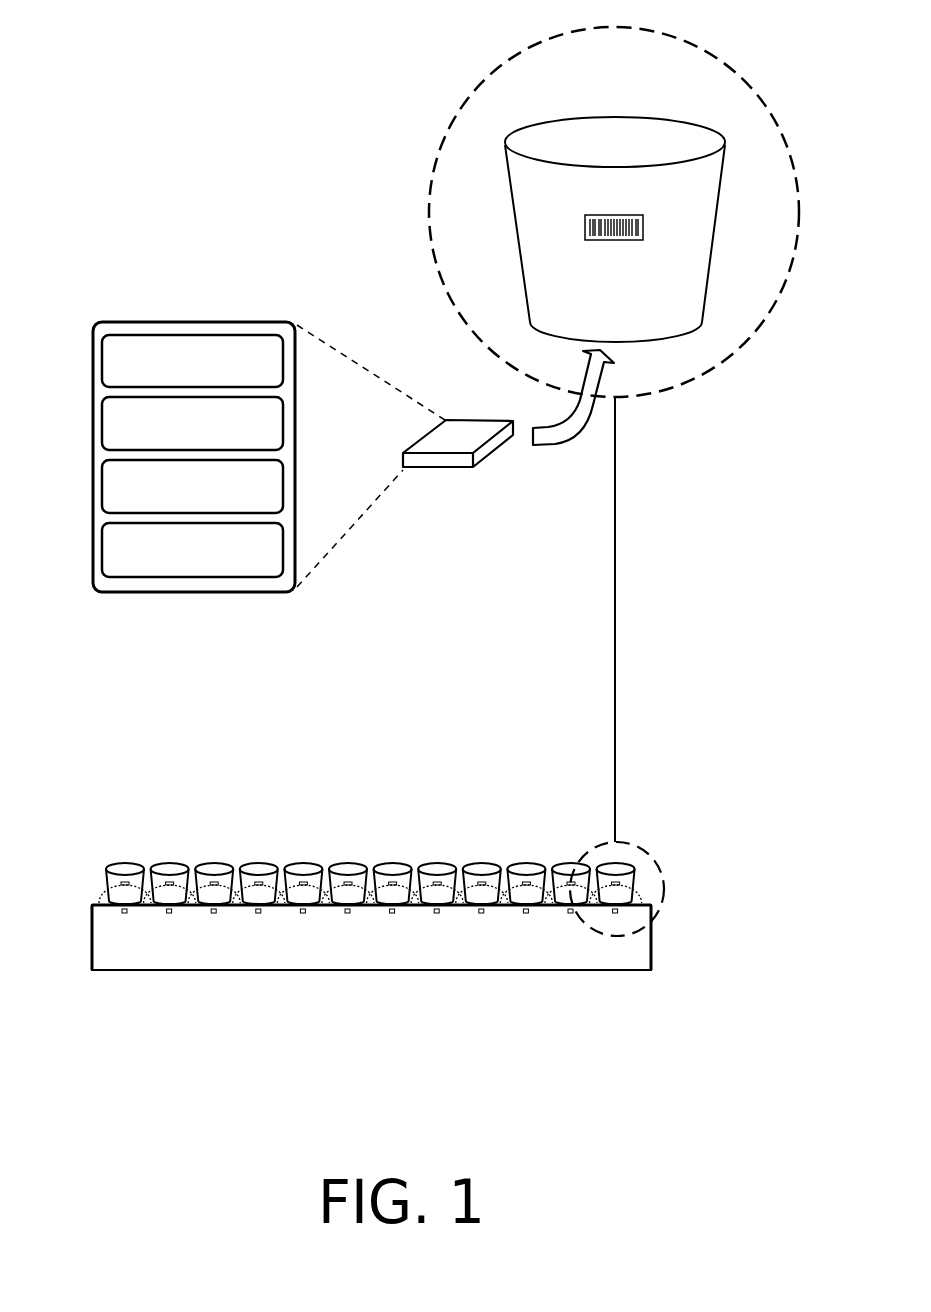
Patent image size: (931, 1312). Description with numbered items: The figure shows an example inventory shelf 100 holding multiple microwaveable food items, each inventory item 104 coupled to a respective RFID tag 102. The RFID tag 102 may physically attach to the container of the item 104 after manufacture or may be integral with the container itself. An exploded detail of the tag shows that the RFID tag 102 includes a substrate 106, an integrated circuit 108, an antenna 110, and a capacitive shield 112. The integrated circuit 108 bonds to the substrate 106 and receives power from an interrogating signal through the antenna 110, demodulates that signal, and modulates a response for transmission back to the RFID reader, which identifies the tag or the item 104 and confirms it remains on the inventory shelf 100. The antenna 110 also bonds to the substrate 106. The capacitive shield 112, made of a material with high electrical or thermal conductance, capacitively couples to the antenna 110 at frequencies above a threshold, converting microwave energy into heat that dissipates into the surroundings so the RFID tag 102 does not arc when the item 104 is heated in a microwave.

The inventory shelf 100 is at (722, 874).
The RFID tag 102 is at (493, 455).
The inventory item 104 is at (505, 143).
The substrate 106 is at (192, 361).
The integrated circuit 108 is at (192, 423).
The antenna 110 is at (192, 486).
The capacitive shield 112 is at (192, 550).